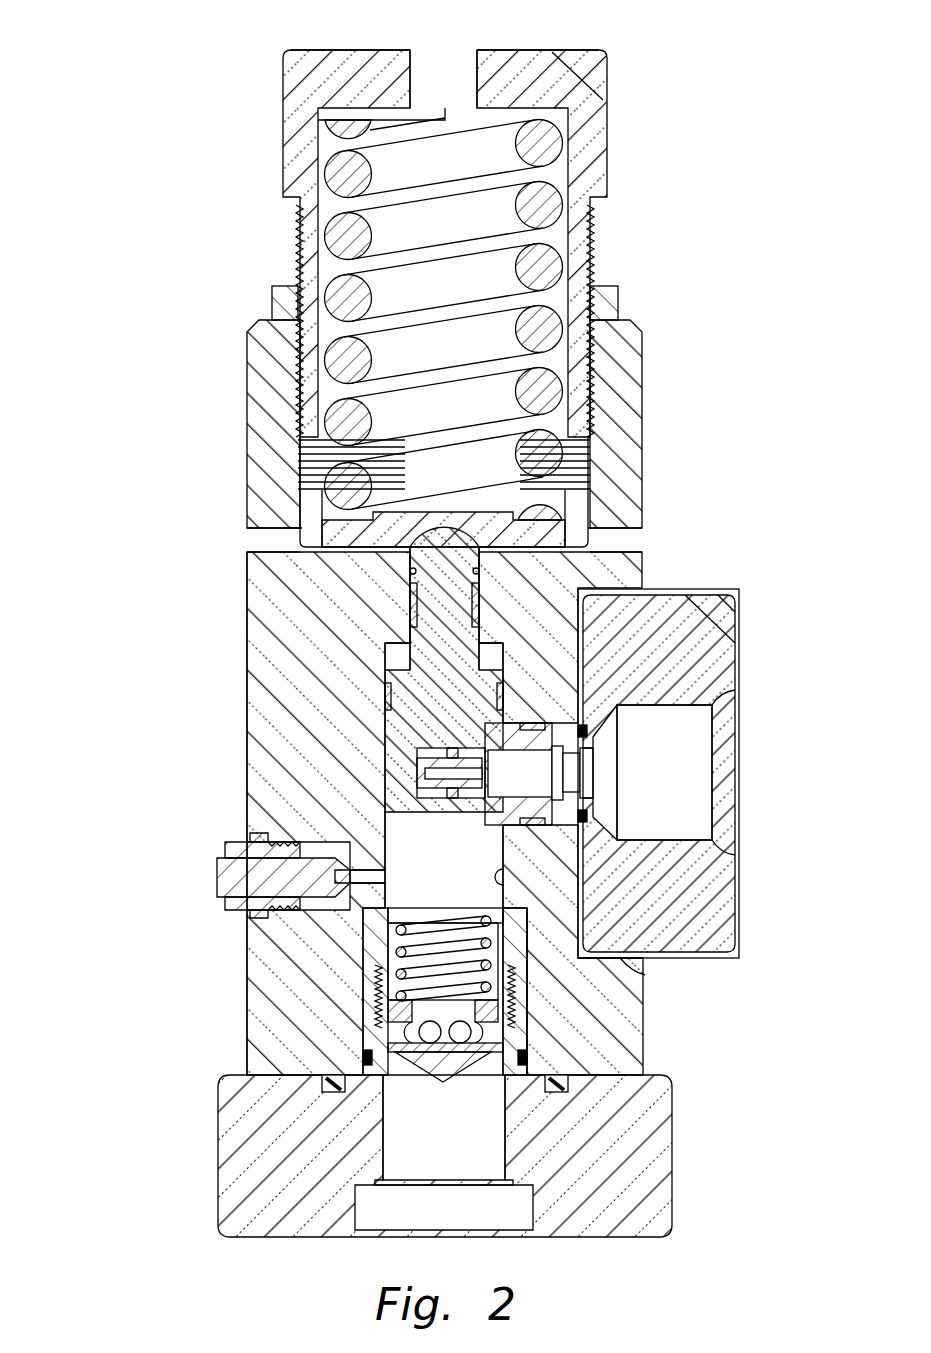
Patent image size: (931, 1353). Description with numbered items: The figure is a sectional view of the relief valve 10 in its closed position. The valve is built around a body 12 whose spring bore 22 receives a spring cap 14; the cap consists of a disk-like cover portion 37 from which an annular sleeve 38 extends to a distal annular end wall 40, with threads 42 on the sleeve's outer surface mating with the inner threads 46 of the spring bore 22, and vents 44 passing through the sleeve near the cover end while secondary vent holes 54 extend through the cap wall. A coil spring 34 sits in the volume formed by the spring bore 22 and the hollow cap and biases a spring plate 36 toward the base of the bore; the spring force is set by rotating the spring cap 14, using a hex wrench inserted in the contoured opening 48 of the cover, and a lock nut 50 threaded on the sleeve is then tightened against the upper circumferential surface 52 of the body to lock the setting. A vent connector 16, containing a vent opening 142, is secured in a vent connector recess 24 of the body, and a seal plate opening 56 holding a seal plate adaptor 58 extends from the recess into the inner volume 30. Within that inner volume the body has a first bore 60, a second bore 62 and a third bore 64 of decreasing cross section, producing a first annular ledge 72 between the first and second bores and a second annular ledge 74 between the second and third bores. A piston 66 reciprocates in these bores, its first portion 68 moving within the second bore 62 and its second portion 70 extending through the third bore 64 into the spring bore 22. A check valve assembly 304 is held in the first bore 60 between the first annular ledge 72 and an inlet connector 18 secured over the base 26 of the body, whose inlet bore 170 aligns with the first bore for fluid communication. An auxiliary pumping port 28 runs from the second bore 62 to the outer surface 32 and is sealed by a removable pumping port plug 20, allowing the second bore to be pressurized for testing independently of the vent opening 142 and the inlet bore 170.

The relief valve 10 is at (128, 360).
The body 12 is at (247, 712).
The spring cap 14 is at (283, 110).
The vent connector 16 is at (740, 915).
The inlet connector 18 is at (220, 1142).
The pumping port plug 20 is at (217, 875).
The spring bore 22 is at (300, 500).
The vent connector recess 24 is at (640, 960).
The base 26 is at (615, 1090).
The auxiliary pumping port 28 is at (262, 912).
The inner volume 30 is at (455, 868).
The outer surface 32 is at (247, 812).
The spring 34 is at (345, 232).
The spring plate 36 is at (400, 520).
The cover portion 37 is at (378, 50).
The annular sleeve 38 is at (594, 237).
The distal annular end wall 40 is at (594, 482).
The threads 42 is at (297, 262).
The vents 44 is at (314, 52).
The inner threads 46 is at (300, 378).
The contoured opening 48 is at (447, 58).
The lock nut 50 is at (272, 300).
The upper circumferential surface 52 is at (630, 302).
The secondary vent holes 54 is at (262, 540).
The seal plate opening 56 is at (585, 770).
The seal plate adaptor 58 is at (575, 810).
The first bore 60 is at (385, 910).
The second bore 62 is at (508, 877).
The third bore 64 is at (410, 578).
The piston 66 is at (400, 730).
The first portion 68 is at (408, 782).
The second portion 70 is at (470, 592).
The first annular ledge 72 is at (527, 940).
The second annular ledge 74 is at (390, 655).
The vent opening 142 is at (690, 775).
The inlet bore 170 is at (460, 1151).
The check valve assembly 304 is at (515, 1020).